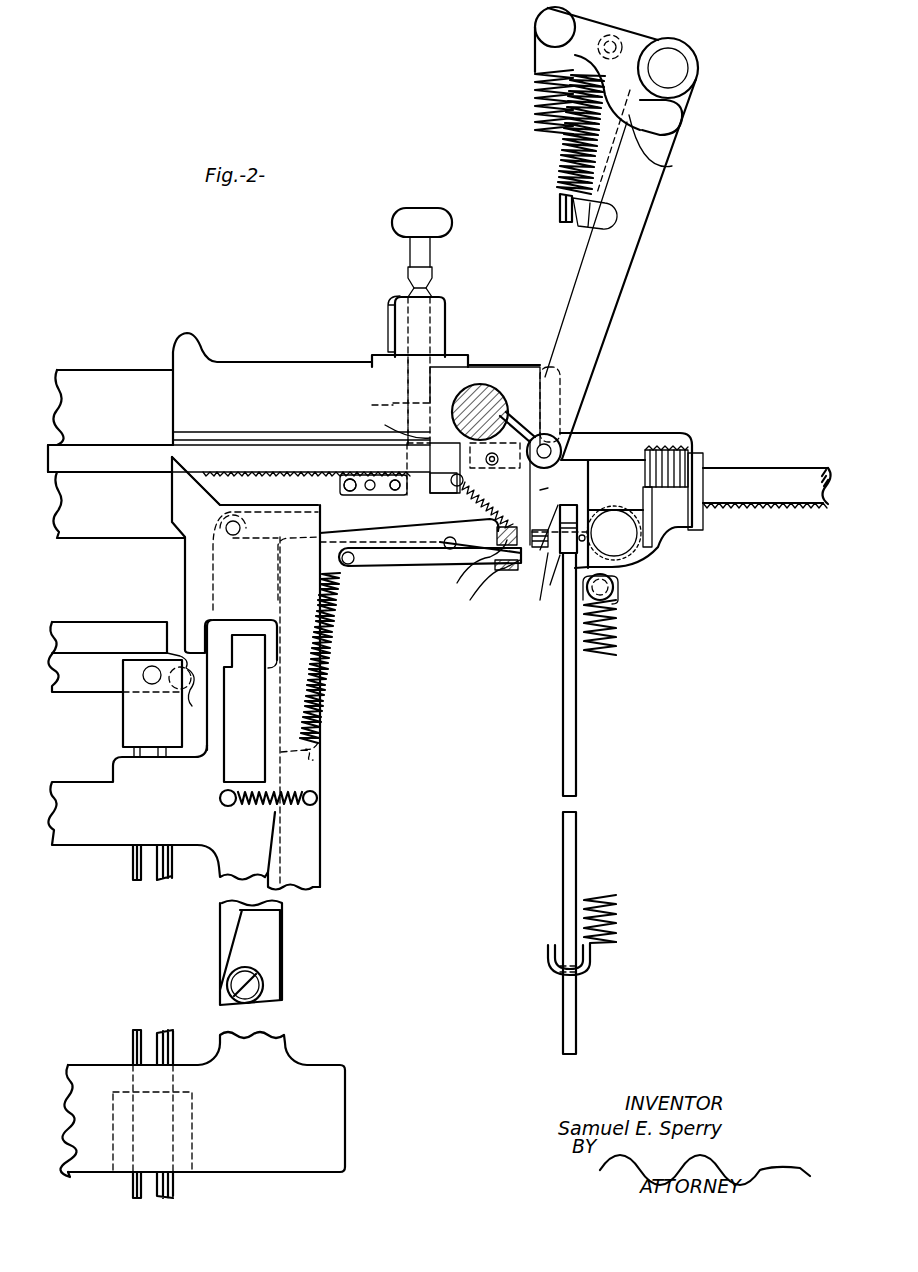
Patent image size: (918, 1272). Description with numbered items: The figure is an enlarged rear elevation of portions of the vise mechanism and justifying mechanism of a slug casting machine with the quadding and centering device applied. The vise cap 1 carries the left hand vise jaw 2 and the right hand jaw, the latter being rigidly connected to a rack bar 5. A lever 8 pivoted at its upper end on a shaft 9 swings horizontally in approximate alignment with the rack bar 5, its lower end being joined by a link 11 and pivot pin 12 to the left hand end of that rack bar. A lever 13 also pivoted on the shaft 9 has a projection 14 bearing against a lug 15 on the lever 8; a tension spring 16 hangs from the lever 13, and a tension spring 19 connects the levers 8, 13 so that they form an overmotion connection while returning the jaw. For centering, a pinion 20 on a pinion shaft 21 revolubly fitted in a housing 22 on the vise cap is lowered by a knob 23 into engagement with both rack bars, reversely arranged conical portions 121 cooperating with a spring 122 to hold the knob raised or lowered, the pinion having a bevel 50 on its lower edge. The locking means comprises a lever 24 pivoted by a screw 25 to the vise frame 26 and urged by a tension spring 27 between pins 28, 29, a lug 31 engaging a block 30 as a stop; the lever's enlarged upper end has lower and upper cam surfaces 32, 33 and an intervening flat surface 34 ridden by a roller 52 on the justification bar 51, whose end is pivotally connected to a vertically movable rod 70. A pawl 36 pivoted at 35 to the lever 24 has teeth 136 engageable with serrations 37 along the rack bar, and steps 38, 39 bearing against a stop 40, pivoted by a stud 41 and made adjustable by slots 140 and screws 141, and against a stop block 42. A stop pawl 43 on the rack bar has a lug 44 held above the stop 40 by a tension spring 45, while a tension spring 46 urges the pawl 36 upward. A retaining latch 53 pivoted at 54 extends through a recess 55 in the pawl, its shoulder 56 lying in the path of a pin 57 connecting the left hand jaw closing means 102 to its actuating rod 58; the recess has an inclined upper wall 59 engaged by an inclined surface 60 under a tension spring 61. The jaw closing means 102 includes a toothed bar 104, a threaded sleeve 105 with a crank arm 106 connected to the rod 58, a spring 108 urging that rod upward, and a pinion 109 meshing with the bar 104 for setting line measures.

The vise cap 1 is at (97, 533).
The left hand vise jaw 2 is at (246, 378).
The rack bar 5 is at (301, 460).
The lever 8 is at (612, 311).
The shaft 9 is at (682, 74).
The link 11 is at (520, 430).
The pivot pin 12 is at (498, 455).
The lever 13 is at (640, 35).
The projection 14 is at (660, 165).
The lug 15 is at (672, 122).
The tension spring 16 is at (530, 100).
The tension spring 19 is at (572, 163).
The pinion 20 is at (400, 400).
The pinion shaft 21 is at (434, 272).
The housing 22 is at (446, 328).
The knob 23 is at (392, 220).
The lever 24 is at (320, 844).
The screw 25 is at (228, 985).
The vise frame 26 is at (325, 1080).
The tension spring 27 is at (255, 806).
The pin 28 is at (318, 796).
The pin 29 is at (220, 800).
The block 30 is at (244, 708).
The lug 31 is at (263, 668).
The lower cam surface 32 is at (180, 624).
The upper cam surface 33 is at (182, 525).
The flat surface 34 is at (185, 576).
The pivot 35 is at (233, 535).
The pawl 36 is at (330, 512).
The teeth or serrations 37 is at (280, 478).
The step 38 is at (410, 502).
The step 39 is at (457, 499).
The stop 40 is at (408, 457).
The stud or screw 41 is at (346, 478).
The stop block 42 is at (440, 494).
The stop pawl 43 is at (452, 412).
The lug 44 is at (395, 432).
The tension spring 45 is at (445, 468).
The tension spring 46 is at (489, 504).
The bevel 50 is at (366, 404).
The justification bar 51 is at (72, 630).
The roller 52 is at (196, 690).
The retaining latch 53 is at (410, 568).
The pivot 54 is at (450, 549).
The recess 55 is at (500, 565).
The shoulder 56 is at (538, 550).
The pin 57 is at (562, 518).
The actuating rod 58 is at (562, 718).
The inclined upper wall 59 is at (466, 572).
The inclined surface 60 is at (485, 587).
The tension spring 61 is at (328, 658).
The vertically movable rod 70 is at (133, 872).
The left hand jaw closing means 102 is at (680, 432).
The toothed bar 104 is at (752, 478).
The threaded sleeve 105 is at (605, 465).
The crank arm 106 is at (556, 595).
The spring 108 is at (618, 632).
The pinion 109 is at (622, 545).
The conical portions 121 is at (406, 282).
The spring 122 is at (388, 322).
The teeth 136 is at (533, 487).
The slots 140 is at (350, 492).
The screws 141 is at (394, 492).